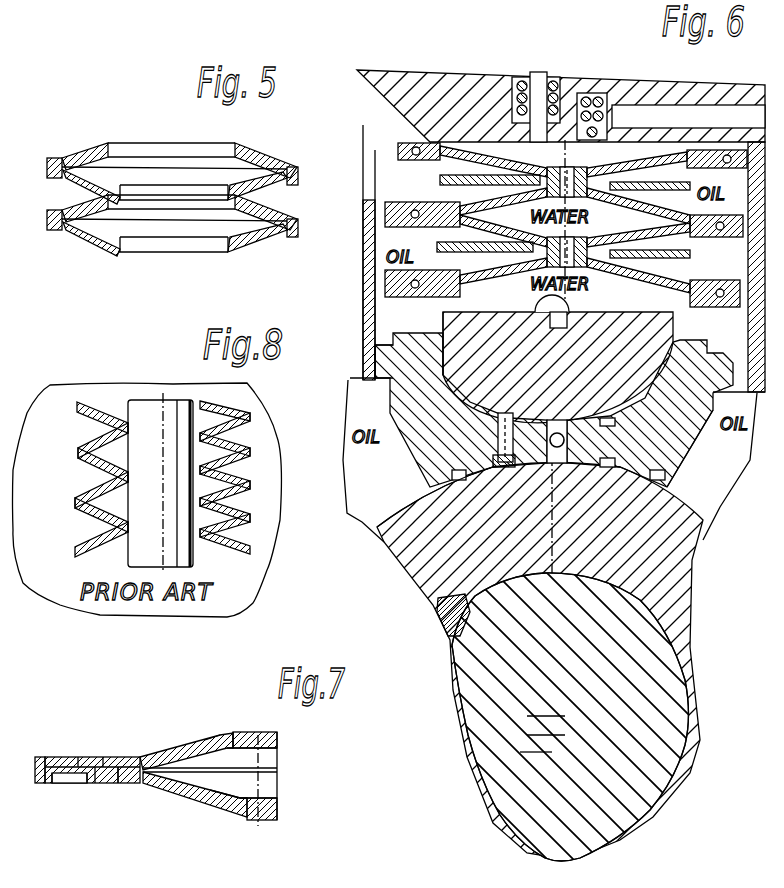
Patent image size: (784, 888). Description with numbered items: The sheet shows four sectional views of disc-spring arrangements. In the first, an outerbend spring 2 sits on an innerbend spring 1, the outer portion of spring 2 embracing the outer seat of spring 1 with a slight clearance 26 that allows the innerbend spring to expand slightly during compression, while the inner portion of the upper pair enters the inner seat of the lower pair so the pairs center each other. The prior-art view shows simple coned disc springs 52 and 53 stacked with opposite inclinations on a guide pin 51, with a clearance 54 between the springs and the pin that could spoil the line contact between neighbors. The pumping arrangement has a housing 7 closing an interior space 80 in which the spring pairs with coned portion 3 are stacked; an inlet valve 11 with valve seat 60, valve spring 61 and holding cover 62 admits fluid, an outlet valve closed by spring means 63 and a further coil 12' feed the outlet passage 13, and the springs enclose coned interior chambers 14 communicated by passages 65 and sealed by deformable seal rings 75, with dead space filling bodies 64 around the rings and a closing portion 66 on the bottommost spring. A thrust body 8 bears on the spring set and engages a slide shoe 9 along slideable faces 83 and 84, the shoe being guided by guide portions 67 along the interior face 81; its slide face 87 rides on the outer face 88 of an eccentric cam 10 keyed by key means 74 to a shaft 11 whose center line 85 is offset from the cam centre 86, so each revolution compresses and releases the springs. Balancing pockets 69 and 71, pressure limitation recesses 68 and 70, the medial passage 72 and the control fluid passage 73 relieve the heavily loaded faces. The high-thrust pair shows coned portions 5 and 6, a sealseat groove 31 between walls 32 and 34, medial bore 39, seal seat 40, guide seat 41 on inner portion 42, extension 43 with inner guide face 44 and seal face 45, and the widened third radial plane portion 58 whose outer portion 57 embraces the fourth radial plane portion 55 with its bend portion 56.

In FIG. 5, the innerbend spring 1 is at (97, 183).
In FIG. 5, the outerbend spring 2 is at (80, 155).
In FIG. 5, the clearance 26 is at (60, 231).
In FIG. 8, the guide pin 51 is at (145, 457).
In FIG. 8, the prior-art disc spring 52 is at (77, 415).
In FIG. 8, the prior-art disc spring 53 is at (78, 445).
In FIG. 8, the clearance 54 is at (100, 553).
In FIG. 7, the coned portion of outerbend spring 5 is at (168, 750).
In FIG. 7, the coned portion of innerbend spring 6 is at (181, 795).
In FIG. 7, the sealseat groove 31 is at (103, 757).
In FIG. 7, the outer wall of sealseat portion 32 is at (78, 757).
In FIG. 7, the inner wall of sealseat portion 34 is at (117, 787).
In FIG. 7, the medial bore 39 is at (264, 822).
In FIG. 7, the seal seat 40 is at (218, 807).
In FIG. 7, the guide seat 41 is at (241, 811).
In FIG. 7, the inner portion 42 is at (255, 821).
In FIG. 7, the extension 43 is at (231, 732).
In FIG. 7, the inner guide face 44 is at (250, 734).
In FIG. 7, the seal face 45 is at (212, 738).
In FIG. 7, the fourth radial plane portion 55 is at (67, 777).
In FIG. 7, the bend portion 56 is at (53, 787).
In FIG. 7, the outer portion 57 is at (37, 787).
In FIG. 7, the third radial plane portion 58 is at (53, 757).
In FIG. 6, the coned portion 3 is at (607, 332).
In FIG. 6, the housing 7 is at (376, 98).
In FIG. 6, the thrust body 8 is at (536, 386).
In FIG. 6, the slide shoe 9 is at (405, 396).
In FIG. 6, the eccentric cam 10 is at (432, 568).
In FIG. 6, the valve / shaft 11 is at (541, 80).
In FIG. 6, the spring coil 12' is at (619, 135).
In FIG. 6, the outlet passage 13 is at (664, 110).
In FIG. 6, the interior chamber 14 is at (507, 148).
In FIG. 6, the valve seat 60 is at (512, 101).
In FIG. 6, the valve spring 61 is at (518, 86).
In FIG. 6, the holding cover 62 is at (529, 78).
In FIG. 6, the spring means 63 is at (607, 114).
In FIG. 6, the dead space filling body 64 is at (440, 181).
In FIG. 6, the passage 65 is at (569, 175).
In FIG. 6, the closing portion 66 is at (474, 343).
In FIG. 6, the guide portions 67 is at (375, 348).
In FIG. 6, the pressure limitation recess 68 is at (459, 373).
In FIG. 6, the fluid pressure balancing pocket 69 is at (498, 417).
In FIG. 6, the pressure limitation recess 70 is at (430, 477).
In FIG. 6, the fluid pressure balancing pocket 71 is at (494, 459).
In FIG. 6, the medial passage 72 is at (550, 470).
In FIG. 6, the control fluid passage 73 is at (566, 440).
In FIG. 6, the key means 74 is at (446, 616).
In FIG. 6, the seal ring 75 is at (412, 140).
In FIG. 6, the interior space 80 is at (392, 165).
In FIG. 6, the interior face 81 is at (380, 186).
In FIG. 6, the slideable face 83 is at (405, 334).
In FIG. 6, the slideable face 84 is at (357, 326).
In FIG. 6, the center line 85 is at (520, 752).
In FIG. 6, the centre 86 is at (520, 752).
In FIG. 6, the slide face 87 is at (685, 515).
In FIG. 6, the outer face 88 is at (385, 508).